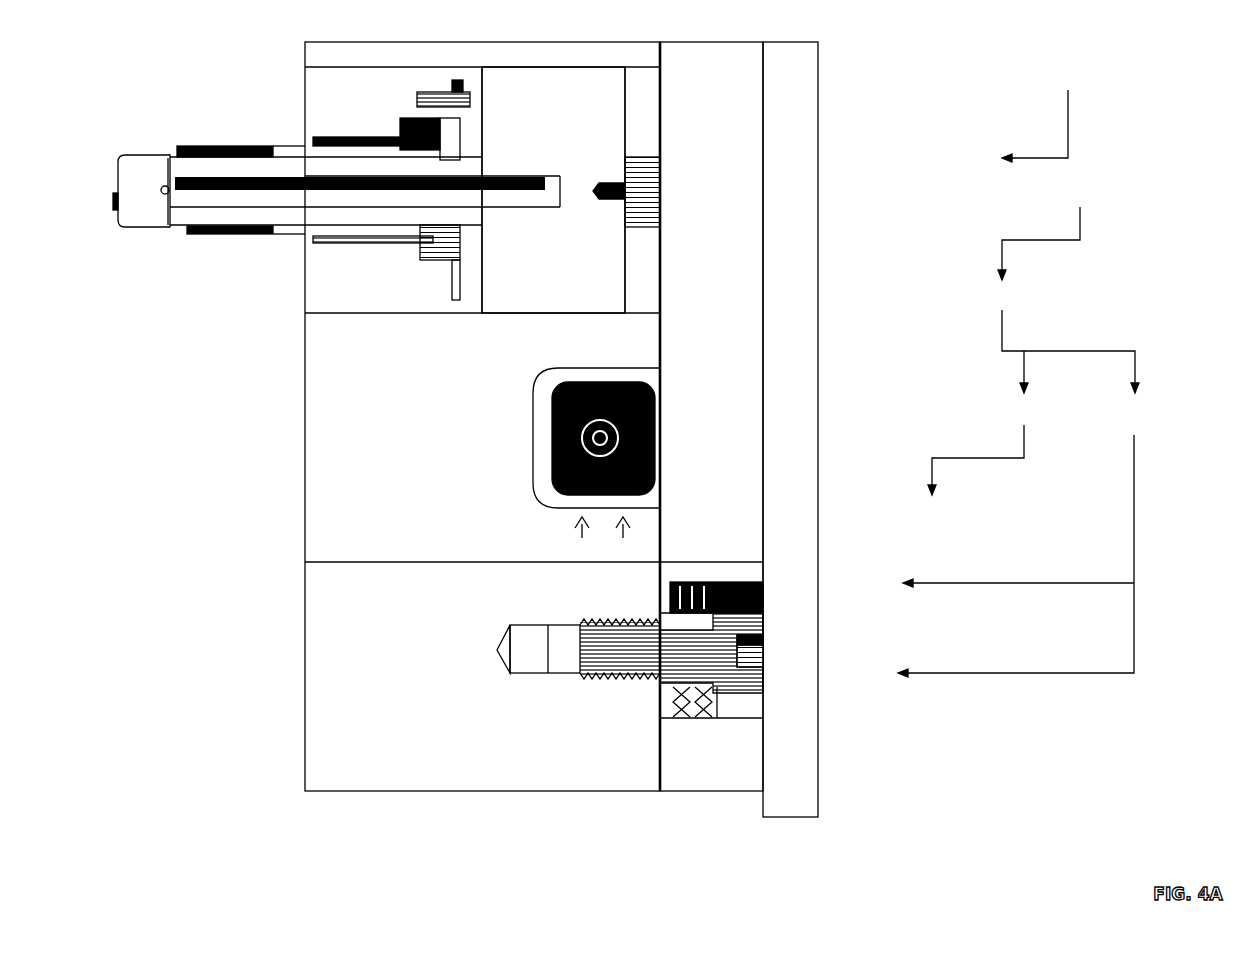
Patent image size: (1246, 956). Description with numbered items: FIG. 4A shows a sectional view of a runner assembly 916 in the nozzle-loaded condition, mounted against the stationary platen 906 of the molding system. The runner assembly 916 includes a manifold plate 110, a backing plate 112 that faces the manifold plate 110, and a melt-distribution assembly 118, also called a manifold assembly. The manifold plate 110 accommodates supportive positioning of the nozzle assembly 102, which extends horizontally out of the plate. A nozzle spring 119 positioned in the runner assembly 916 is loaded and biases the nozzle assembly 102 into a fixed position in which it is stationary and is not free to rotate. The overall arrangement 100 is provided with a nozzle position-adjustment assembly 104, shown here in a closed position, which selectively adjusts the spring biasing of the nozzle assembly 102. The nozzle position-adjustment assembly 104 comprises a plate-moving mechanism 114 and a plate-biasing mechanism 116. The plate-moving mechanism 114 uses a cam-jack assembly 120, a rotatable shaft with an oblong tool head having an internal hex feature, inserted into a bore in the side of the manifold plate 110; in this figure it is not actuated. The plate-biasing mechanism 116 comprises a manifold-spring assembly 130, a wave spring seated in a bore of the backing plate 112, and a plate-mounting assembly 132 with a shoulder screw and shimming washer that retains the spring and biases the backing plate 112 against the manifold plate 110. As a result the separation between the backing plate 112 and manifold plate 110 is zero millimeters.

The fastening system 100 is at (1048, 230).
The nozzle assembly 102 is at (218, 210).
The nozzle position-adjustment assembly 104 is at (1063, 339).
The manifold plate 110 is at (477, 768).
The backing plate 112 is at (737, 753).
The plate-moving mechanism 114 is at (984, 447).
The plate-biasing mechanism 116 is at (1024, 541).
The melt-distribution assembly 118 is at (575, 270).
The nozzle spring 119 is at (447, 138).
The cam-jack assembly 120 is at (660, 475).
The manifold-spring assembly 130 is at (713, 703).
The plate-mounting assembly 132 is at (713, 618).
The stationary platen 906 is at (792, 817).
The runner assembly 916 is at (1042, 110).